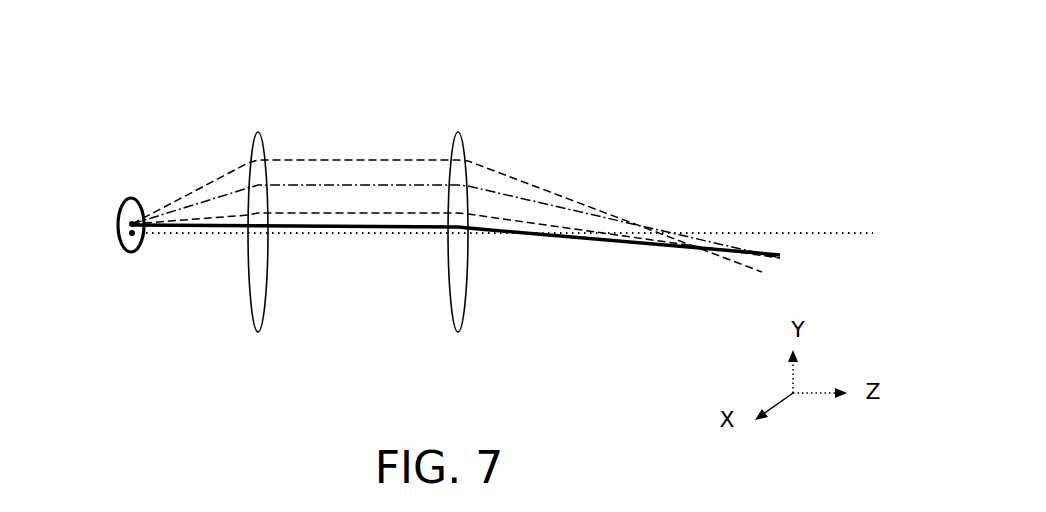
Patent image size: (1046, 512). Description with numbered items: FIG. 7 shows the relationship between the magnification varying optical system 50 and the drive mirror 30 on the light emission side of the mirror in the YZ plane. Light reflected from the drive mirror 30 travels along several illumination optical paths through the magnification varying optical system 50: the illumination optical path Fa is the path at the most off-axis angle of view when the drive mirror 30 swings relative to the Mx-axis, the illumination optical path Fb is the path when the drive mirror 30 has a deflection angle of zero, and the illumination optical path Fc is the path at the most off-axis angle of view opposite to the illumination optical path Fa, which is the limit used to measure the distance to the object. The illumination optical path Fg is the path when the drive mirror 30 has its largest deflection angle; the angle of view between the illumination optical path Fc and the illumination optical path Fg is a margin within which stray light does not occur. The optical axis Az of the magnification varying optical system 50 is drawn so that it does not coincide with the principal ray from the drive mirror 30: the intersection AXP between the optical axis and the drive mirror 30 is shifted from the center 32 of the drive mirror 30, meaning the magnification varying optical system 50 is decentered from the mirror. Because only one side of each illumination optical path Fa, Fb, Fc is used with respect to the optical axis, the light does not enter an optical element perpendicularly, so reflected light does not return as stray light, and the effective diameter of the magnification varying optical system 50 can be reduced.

The drive mirror 30 is at (126, 251).
The center of the drive mirror 32 is at (122, 211).
The intersection between the optical axis and the drive mirror AXP is at (142, 244).
The magnification varying optical system 50 is at (248, 107).
The optical axis Az is at (820, 237).
The illumination optical path Fa is at (247, 163).
The illumination optical path Fb is at (233, 190).
The illumination optical path Fc is at (220, 215).
The illumination optical path Fg is at (298, 229).